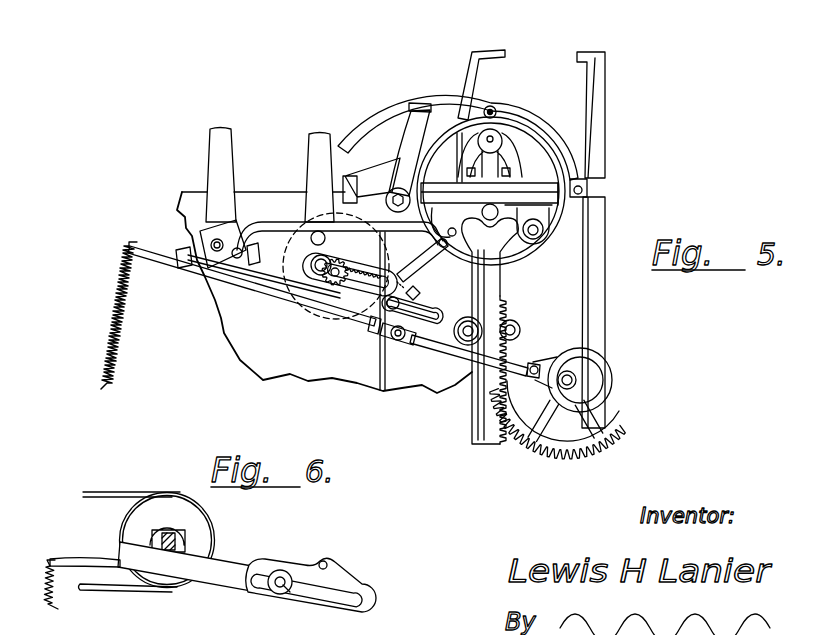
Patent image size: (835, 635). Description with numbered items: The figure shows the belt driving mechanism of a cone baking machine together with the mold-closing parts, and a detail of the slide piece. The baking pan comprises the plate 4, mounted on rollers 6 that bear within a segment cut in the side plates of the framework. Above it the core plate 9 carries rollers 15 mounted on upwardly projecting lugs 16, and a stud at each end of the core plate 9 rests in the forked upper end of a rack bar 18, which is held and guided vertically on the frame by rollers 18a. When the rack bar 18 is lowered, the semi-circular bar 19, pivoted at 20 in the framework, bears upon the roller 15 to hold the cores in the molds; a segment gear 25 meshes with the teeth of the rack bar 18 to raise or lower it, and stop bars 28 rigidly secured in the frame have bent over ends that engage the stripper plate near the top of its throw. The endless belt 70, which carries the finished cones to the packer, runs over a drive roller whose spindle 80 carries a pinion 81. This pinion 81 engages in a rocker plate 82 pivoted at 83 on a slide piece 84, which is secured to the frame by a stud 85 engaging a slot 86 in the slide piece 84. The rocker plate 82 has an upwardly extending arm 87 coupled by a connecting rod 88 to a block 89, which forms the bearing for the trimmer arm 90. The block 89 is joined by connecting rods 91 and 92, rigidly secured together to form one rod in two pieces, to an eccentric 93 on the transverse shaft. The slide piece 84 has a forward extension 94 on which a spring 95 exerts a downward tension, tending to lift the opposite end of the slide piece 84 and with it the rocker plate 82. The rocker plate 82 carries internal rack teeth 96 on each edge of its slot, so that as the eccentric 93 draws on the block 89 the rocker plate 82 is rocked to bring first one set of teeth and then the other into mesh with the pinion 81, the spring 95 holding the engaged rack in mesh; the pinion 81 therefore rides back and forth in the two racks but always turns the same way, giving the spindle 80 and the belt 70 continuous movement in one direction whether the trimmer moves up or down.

In FIG. 5, the plate 4 is at (546, 205).
In FIG. 5, the rollers 6 is at (543, 234).
In FIG. 5, the core plate 9 is at (527, 190).
In FIG. 5, the rollers 15 is at (497, 118).
In FIG. 5, the lugs 16 is at (496, 158).
In FIG. 5, the rack bar 18 is at (492, 277).
In FIG. 5, the rollers 18a is at (518, 330).
In FIG. 5, the semi-circular bar 19 is at (381, 108).
In FIG. 5, the pivot 20 is at (588, 185).
In FIG. 5, the segment gear 25 is at (603, 432).
In FIG. 5, the stop bars 28 is at (468, 70).
In FIG. 6, the belt 70 is at (124, 491).
In FIG. 5, the spindle 80 is at (320, 272).
In FIG. 5, the pinion 81 is at (338, 266).
In FIG. 5, the rocker plate 82 is at (384, 272).
In FIG. 5, the pivot 83 is at (421, 293).
In FIG. 6, the pivot 83 is at (326, 561).
In FIG. 6, the slide piece 84 is at (355, 582).
In FIG. 5, the stud 85 is at (377, 324).
In FIG. 6, the stud 85 is at (283, 574).
In FIG. 6, the slot 86 is at (348, 598).
In FIG. 5, the arm 87 is at (437, 268).
In FIG. 5, the connecting rod 88 is at (364, 229).
In FIG. 5, the block 89 is at (227, 232).
In FIG. 5, the arm 90 is at (212, 150).
In FIG. 5, the connecting rod 91 is at (335, 286).
In FIG. 5, the connecting rod 92 is at (451, 348).
In FIG. 5, the eccentric 93 is at (600, 373).
In FIG. 6, the forward extension 94 is at (210, 569).
In FIG. 5, the spring 95 is at (123, 328).
In FIG. 6, the spring 95 is at (61, 597).
In FIG. 5, the internal rack teeth 96 is at (355, 285).